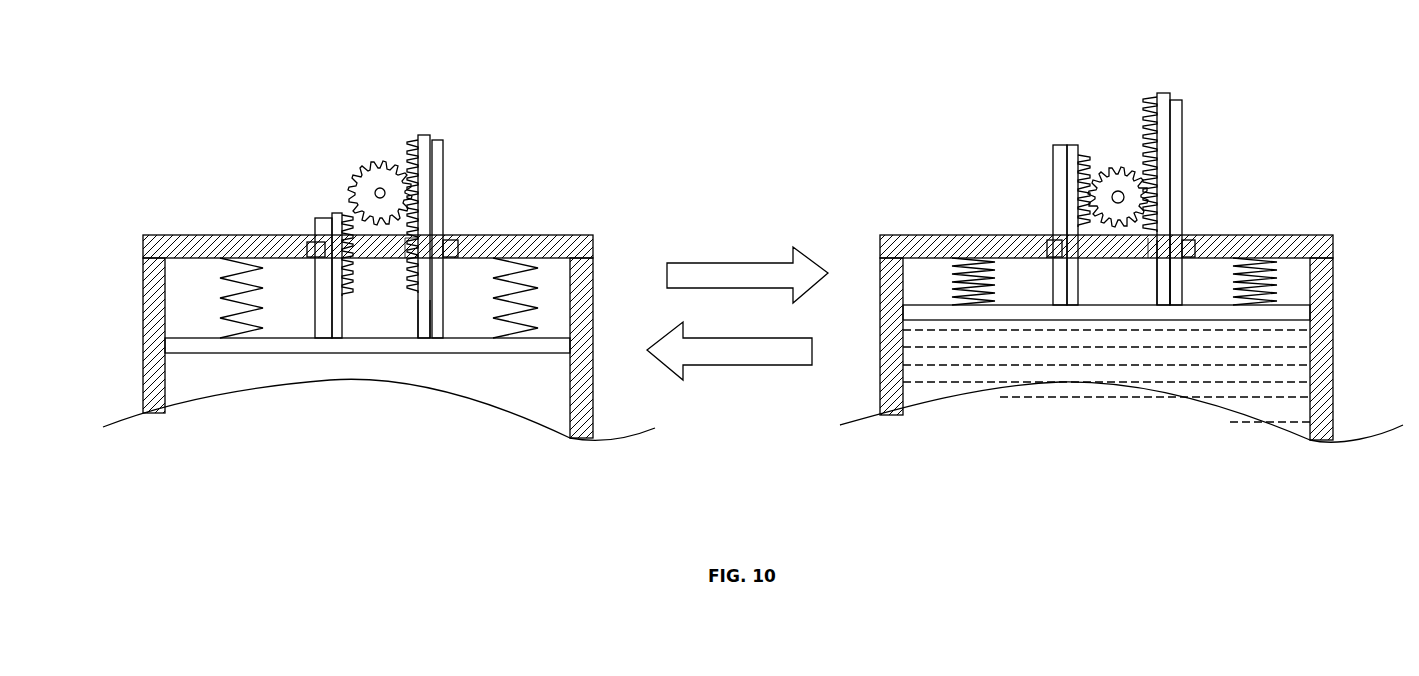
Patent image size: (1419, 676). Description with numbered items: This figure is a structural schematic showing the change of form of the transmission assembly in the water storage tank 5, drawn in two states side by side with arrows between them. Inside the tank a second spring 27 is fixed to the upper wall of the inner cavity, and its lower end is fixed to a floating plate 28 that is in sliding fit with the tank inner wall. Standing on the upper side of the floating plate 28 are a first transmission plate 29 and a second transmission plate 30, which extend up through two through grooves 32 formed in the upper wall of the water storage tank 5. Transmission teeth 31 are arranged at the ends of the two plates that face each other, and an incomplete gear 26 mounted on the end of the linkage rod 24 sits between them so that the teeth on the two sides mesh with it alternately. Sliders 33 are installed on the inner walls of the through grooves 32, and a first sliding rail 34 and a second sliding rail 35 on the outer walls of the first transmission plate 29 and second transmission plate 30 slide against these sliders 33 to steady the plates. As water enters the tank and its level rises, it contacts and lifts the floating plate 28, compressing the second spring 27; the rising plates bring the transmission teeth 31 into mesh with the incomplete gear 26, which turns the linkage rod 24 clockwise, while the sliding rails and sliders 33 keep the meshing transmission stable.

The water storage tank 5 is at (153, 322).
The linkage rod 24 is at (375, 187).
The incomplete gear 26 is at (380, 178).
The second spring 27 is at (240, 280).
The floating plate 28 is at (530, 352).
The first transmission plate 29 is at (337, 320).
The second transmission plate 30 is at (425, 318).
The transmission teeth 31 is at (413, 140).
The through grooves 32 is at (412, 248).
The sliders 33 is at (448, 248).
The first sliding rail 34 is at (318, 218).
The second sliding rail 35 is at (445, 150).